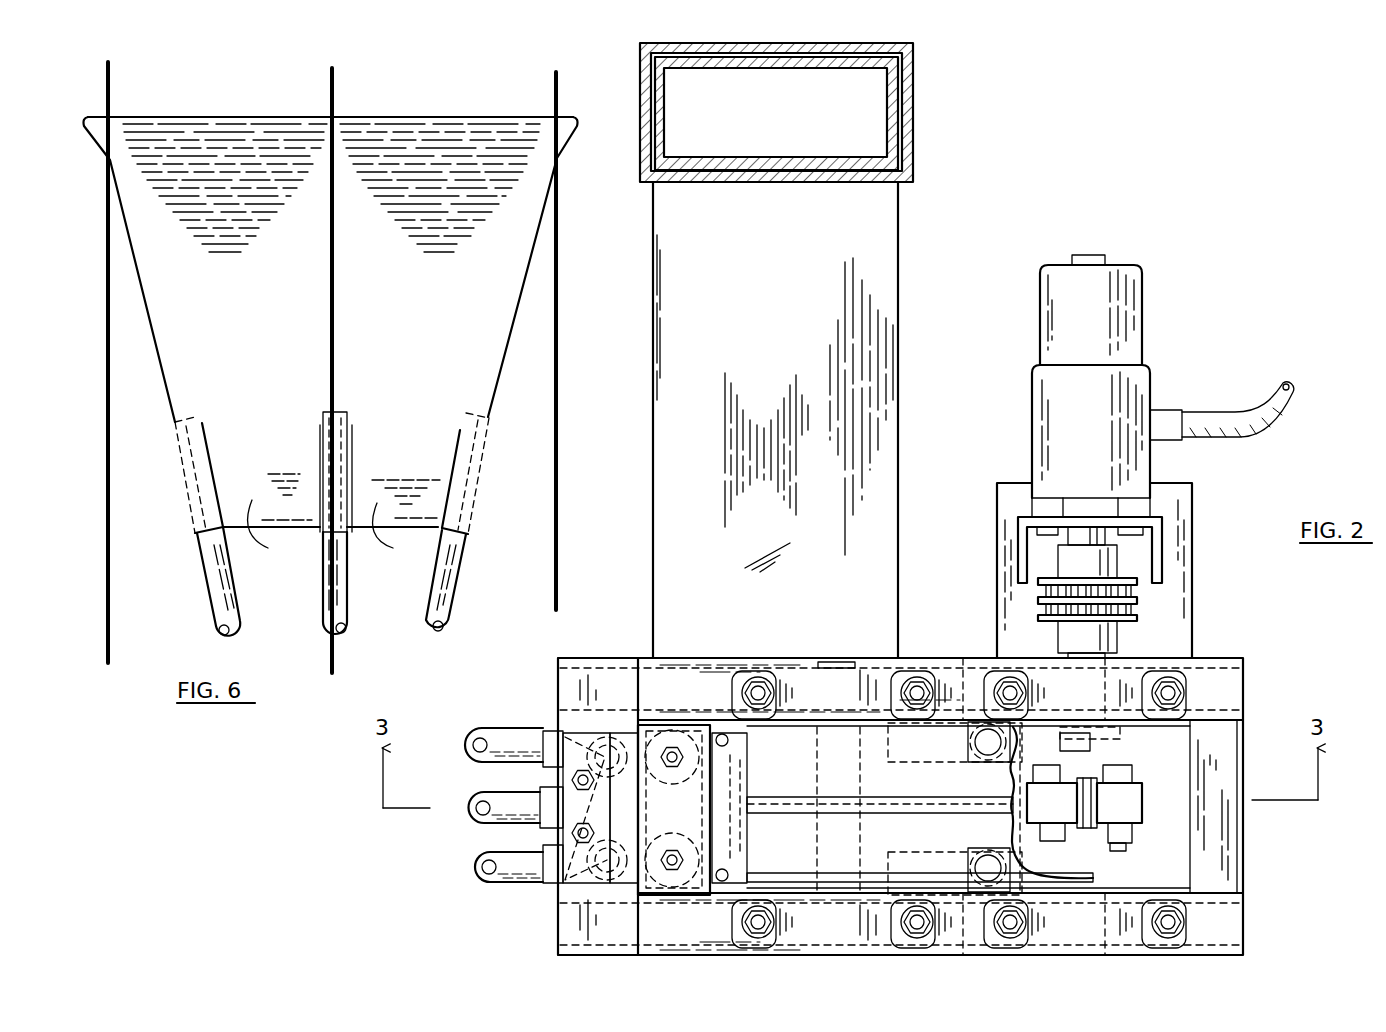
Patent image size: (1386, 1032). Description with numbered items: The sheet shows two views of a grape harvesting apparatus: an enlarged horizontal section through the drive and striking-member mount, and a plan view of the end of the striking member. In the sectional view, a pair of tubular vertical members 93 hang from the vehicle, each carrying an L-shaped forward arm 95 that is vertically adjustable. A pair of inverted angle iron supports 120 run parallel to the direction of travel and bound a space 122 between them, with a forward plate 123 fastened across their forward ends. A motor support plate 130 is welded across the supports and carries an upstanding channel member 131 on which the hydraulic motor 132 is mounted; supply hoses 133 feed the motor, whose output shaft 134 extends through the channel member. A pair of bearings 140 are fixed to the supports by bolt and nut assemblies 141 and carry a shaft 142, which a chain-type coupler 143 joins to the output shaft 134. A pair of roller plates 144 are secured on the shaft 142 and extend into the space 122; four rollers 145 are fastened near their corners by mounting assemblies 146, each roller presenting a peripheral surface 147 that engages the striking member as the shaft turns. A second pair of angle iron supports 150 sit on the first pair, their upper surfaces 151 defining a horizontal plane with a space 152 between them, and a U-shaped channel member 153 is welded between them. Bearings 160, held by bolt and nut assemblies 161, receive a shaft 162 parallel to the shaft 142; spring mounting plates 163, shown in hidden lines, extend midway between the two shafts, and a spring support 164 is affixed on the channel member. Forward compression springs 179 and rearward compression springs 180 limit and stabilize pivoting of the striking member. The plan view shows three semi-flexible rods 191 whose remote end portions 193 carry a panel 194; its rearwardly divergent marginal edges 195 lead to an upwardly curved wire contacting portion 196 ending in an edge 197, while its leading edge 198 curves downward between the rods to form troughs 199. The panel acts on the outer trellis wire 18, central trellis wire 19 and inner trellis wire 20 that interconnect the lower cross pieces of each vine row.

In FIG. 6, the outer trellis wire 18 is at (556, 380).
In FIG. 6, the central trellis wire 19 is at (325, 383).
In FIG. 6, the inner trellis wire 20 is at (105, 383).
In FIG. 6, the semi-flexible rods 191 is at (215, 578).
In FIG. 6, the remote end portions 193 is at (320, 437).
In FIG. 6, the panel 194 is at (390, 307).
In FIG. 6, the marginal edges 195 is at (128, 220).
In FIG. 6, the wire contacting portion 196 is at (355, 158).
In FIG. 6, the edge 197 is at (365, 115).
In FIG. 6, the leading edge 198 is at (313, 530).
In FIG. 6, the troughs 199 is at (338, 529).
In FIG. 2, the vertical members 93 is at (920, 115).
In FIG. 2, the forward arm 95 is at (900, 237).
In FIG. 2, the angle iron supports 120 is at (1243, 678).
In FIG. 2, the space 122 is at (1155, 755).
In FIG. 2, the forward plate 123 is at (1247, 832).
In FIG. 2, the motor support plate 130 is at (1182, 618).
In FIG. 2, the channel member 131 is at (1165, 540).
In FIG. 2, the hydraulic motor 132 is at (1100, 324).
In FIG. 2, the supply hoses 133 is at (1160, 415).
In FIG. 2, the output shaft 134 is at (1080, 537).
In FIG. 2, the bearings 140 is at (1135, 668).
In FIG. 2, the bolt and nut assemblies 141 is at (1010, 680).
In FIG. 2, the shaft 142 is at (1100, 737).
In FIG. 2, the coupler 143 is at (1135, 592).
In FIG. 2, the roller plates 144 is at (1135, 776).
In FIG. 2, the rollers 145 is at (1065, 813).
In FIG. 2, the mounting assemblies 146 is at (1050, 765).
In FIG. 2, the peripheral surface 147 is at (1100, 792).
In FIG. 2, the second angle iron supports 150 is at (917, 680).
In FIG. 2, the upper surfaces 151 is at (705, 699).
In FIG. 2, the space 152 is at (802, 738).
In FIG. 2, the channel member 153 is at (982, 790).
In FIG. 2, the bearings 160 is at (883, 667).
In FIG. 2, the bolt and nut assemblies 161 is at (758, 685).
In FIG. 2, the shaft 162 is at (835, 660).
In FIG. 2, the spring mounting plates 163 is at (918, 764).
In FIG. 2, the spring support 164 is at (575, 700).
In FIG. 2, the forward compression springs 179 is at (968, 743).
In FIG. 2, the rearward compression springs 180 is at (560, 730).